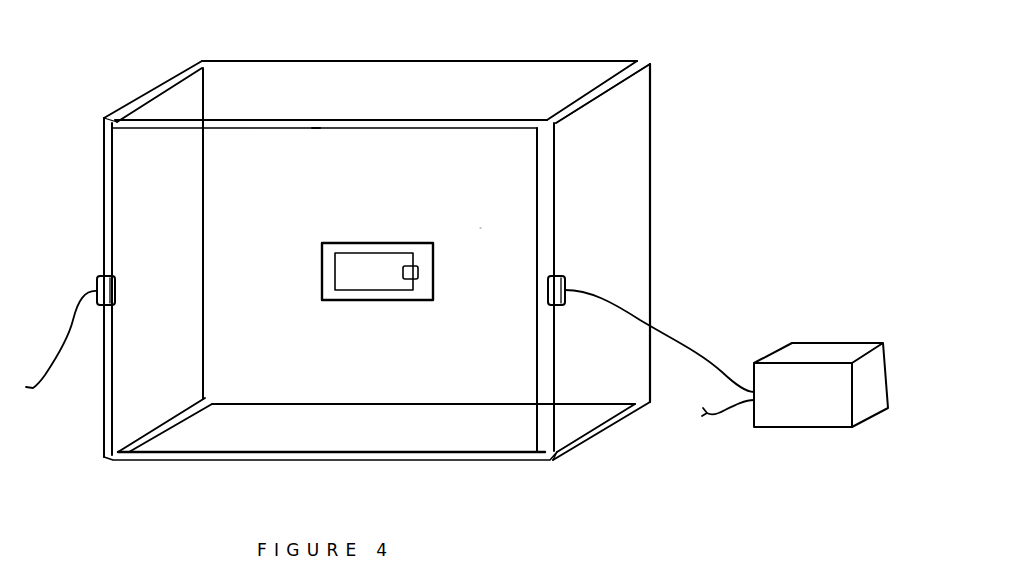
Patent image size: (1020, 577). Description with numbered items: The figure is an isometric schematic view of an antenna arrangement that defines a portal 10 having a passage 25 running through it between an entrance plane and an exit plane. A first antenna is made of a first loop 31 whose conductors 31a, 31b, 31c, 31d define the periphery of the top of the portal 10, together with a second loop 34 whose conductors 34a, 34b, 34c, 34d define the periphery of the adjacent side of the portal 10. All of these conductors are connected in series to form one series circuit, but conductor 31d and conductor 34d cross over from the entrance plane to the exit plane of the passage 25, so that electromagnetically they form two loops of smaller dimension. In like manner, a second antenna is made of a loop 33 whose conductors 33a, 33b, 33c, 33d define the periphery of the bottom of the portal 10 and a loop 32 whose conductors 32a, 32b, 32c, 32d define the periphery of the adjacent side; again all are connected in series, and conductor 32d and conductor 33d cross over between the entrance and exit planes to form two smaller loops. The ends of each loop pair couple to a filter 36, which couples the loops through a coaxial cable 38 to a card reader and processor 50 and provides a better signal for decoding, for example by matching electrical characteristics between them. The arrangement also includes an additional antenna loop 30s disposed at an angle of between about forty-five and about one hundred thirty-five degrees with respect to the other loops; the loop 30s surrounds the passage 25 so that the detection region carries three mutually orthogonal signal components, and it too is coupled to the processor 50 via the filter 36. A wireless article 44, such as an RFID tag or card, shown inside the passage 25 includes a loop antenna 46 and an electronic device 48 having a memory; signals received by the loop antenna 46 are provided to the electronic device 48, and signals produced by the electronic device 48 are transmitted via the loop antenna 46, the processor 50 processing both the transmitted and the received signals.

The portal 10 is at (745, 94).
The passage 25 is at (490, 224).
The additional antenna loop 30s is at (313, 132).
The first loop 31 is at (242, 56).
The conductor 31a is at (352, 118).
The conductor 31b is at (583, 96).
The conductor 31c is at (353, 58).
The conductor 31d is at (167, 80).
The second loop 32 is at (653, 143).
The conductor 32a is at (557, 218).
The conductor 32b is at (598, 102).
The conductor 32c is at (652, 210).
The conductor 32d is at (613, 423).
The first loop 33 is at (484, 463).
The conductor 33a is at (190, 459).
The conductor 33b is at (180, 423).
The conductor 33c is at (382, 403).
The conductor 33d is at (587, 442).
The second loop 34 is at (207, 280).
The conductor 34a is at (102, 215).
The conductor 34b is at (180, 406).
The conductor 34c is at (200, 223).
The conductor 34d is at (133, 102).
The filter 36 is at (115, 277).
The coaxial cable 38 is at (70, 325).
The wireless article 44 is at (398, 263).
The loop antenna 46 is at (372, 291).
The electronic device 48 is at (418, 272).
The card reader and processor 50 is at (830, 343).